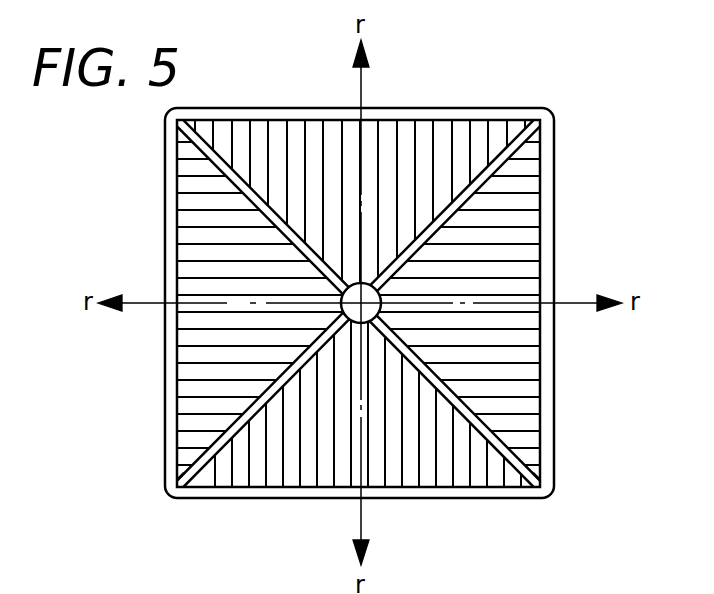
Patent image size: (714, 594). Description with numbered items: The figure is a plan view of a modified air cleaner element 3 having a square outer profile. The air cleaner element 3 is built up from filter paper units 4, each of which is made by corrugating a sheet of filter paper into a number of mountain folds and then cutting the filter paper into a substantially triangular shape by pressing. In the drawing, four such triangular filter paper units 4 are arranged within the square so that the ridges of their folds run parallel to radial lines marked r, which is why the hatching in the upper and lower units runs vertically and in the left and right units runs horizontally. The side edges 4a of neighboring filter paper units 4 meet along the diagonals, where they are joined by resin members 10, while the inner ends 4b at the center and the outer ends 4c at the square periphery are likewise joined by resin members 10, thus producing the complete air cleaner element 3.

The air cleaner element 3 is at (349, 279).
The filter paper unit 4 is at (312, 137).
The side edge 4a is at (492, 447).
The inner end 4b is at (358, 322).
The outer end 4c is at (408, 490).
The resin member 10 is at (482, 178).